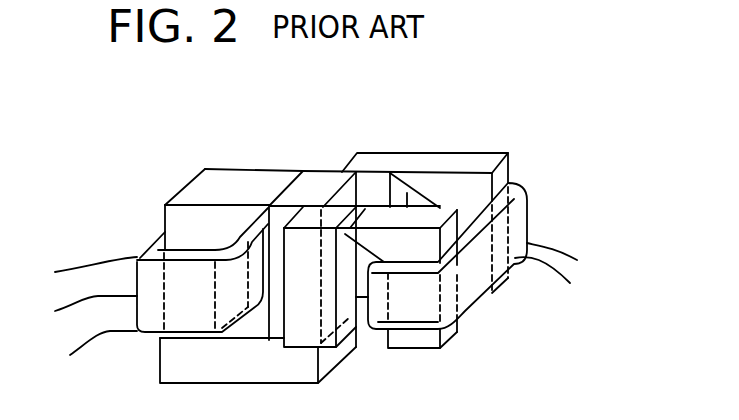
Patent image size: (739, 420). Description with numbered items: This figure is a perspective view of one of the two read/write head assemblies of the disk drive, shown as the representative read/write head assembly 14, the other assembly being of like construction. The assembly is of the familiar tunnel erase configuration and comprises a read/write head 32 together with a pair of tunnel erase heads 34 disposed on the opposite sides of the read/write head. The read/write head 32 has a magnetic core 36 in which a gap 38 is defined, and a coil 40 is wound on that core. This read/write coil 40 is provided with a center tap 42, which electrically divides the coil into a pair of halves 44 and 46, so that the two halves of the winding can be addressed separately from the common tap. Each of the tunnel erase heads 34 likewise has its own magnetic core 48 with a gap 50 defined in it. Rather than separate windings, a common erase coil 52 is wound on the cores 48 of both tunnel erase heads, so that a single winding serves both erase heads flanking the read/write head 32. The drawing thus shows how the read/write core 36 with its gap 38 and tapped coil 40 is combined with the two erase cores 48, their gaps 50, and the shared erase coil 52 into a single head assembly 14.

The read/write head assembly 14 is at (518, 108).
The read/write head 32 is at (178, 192).
The tunnel erase head 34 is at (518, 165).
The magnetic core 36 is at (220, 178).
The gap 38 is at (294, 180).
The coil 40 is at (143, 242).
The center tap 42 is at (96, 290).
The coil half 44 is at (136, 275).
The coil half 46 is at (136, 308).
The magnetic core 48 is at (447, 157).
The gap 50 is at (348, 206).
The common erase coil 52 is at (529, 230).